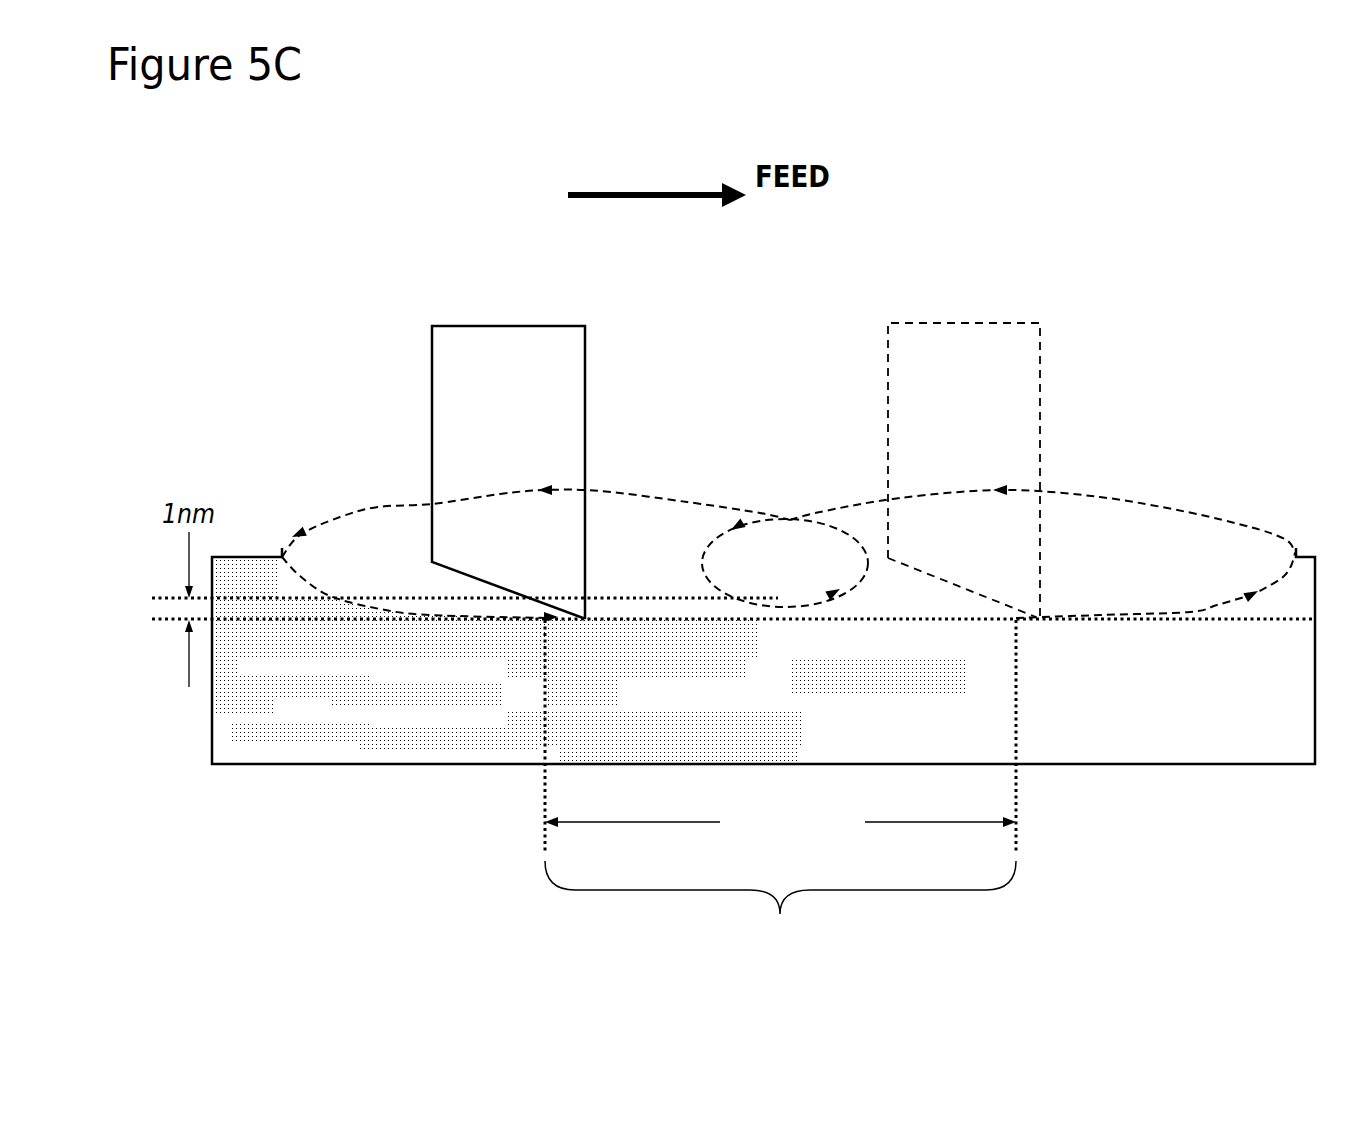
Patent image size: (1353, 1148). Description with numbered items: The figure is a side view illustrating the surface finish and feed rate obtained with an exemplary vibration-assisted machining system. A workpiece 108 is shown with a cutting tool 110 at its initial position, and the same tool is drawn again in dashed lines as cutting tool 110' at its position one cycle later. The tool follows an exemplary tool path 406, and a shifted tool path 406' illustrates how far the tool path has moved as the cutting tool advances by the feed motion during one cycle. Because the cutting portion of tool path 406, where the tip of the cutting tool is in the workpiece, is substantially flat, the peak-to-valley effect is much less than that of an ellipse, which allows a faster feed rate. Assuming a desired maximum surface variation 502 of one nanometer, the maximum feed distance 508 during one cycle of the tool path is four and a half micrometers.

The workpiece 108 is at (390, 764).
The cutting tool 110 is at (492, 407).
The cutting tool one cycle later 110' is at (991, 408).
The tool path 406 is at (536, 476).
The shifted tool path 406' is at (1059, 487).
The maximum surface variation 502 is at (138, 598).
The maximum feed distance 508 is at (780, 785).